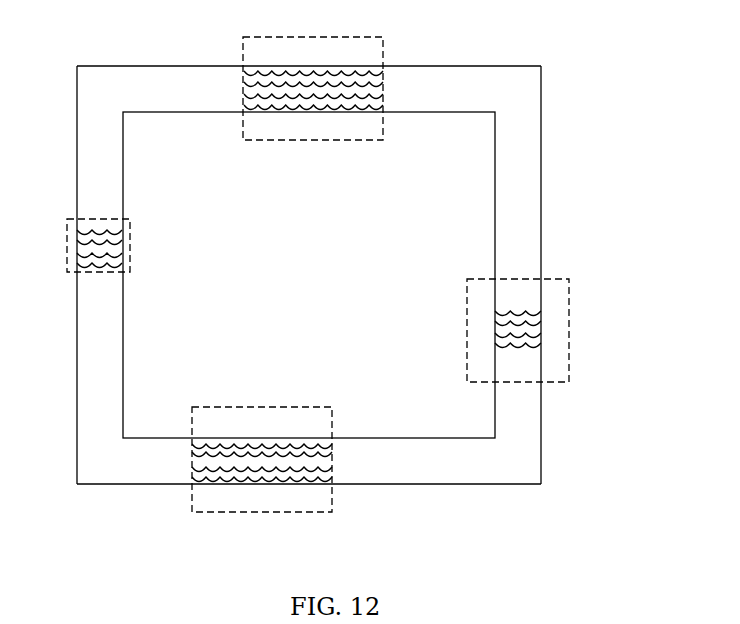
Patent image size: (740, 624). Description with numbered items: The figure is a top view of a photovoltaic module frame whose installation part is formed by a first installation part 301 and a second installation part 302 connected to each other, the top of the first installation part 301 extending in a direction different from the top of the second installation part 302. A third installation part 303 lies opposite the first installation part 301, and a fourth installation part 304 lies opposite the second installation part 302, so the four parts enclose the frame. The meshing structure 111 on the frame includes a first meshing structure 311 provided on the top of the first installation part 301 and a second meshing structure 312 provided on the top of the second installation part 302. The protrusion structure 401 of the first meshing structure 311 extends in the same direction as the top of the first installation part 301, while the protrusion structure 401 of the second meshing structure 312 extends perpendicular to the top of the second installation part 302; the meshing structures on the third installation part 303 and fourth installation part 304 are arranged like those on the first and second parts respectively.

The meshing structure 111 is at (241, 62).
The first installation part 301 is at (404, 488).
The second installation part 302 is at (75, 390).
The third installation part 303 is at (482, 63).
The fourth installation part 304 is at (544, 443).
The first meshing structure 311 is at (252, 515).
The second meshing structure 312 is at (66, 257).
The protrusion structure 401 is at (86, 228).